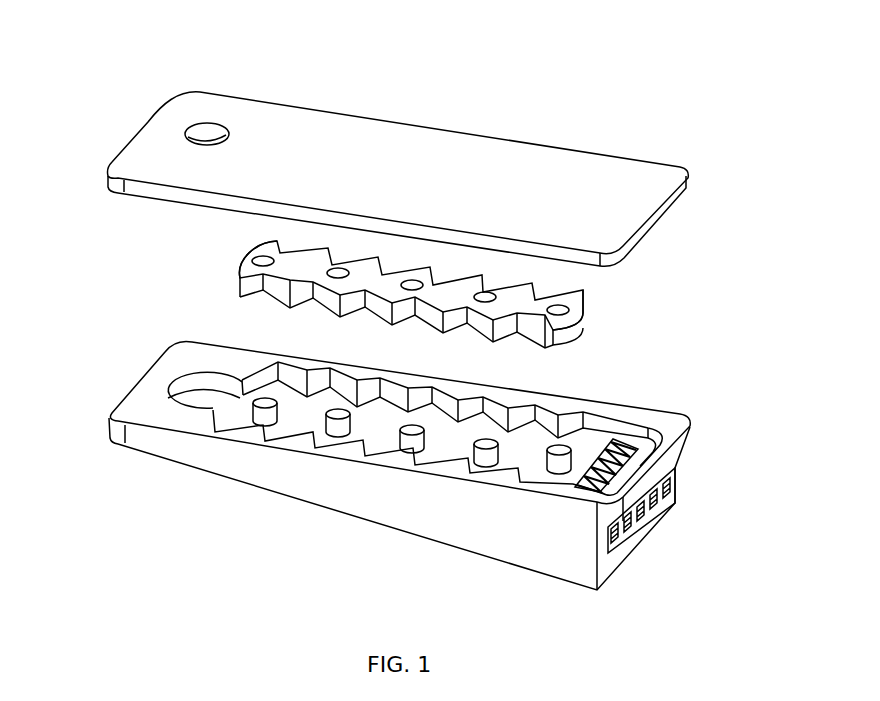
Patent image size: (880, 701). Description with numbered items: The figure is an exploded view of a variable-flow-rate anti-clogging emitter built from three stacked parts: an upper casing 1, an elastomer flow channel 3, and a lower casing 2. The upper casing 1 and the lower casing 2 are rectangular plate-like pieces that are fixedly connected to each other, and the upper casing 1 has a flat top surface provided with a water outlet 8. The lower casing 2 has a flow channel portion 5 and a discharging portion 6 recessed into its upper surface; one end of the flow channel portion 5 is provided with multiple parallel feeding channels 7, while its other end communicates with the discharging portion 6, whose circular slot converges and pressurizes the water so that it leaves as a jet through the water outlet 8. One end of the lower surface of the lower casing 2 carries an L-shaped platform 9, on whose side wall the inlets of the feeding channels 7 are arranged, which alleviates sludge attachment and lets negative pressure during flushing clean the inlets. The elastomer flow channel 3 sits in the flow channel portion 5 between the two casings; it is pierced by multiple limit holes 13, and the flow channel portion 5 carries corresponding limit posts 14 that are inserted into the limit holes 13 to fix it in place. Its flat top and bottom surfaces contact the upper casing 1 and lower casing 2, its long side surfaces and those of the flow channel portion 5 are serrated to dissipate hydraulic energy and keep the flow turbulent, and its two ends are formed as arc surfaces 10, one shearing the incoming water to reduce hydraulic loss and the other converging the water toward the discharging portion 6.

The upper casing 1 is at (343, 130).
The lower casing 2 is at (267, 473).
The elastomer flow channel 3 is at (517, 305).
The flow channel portion 5 is at (525, 453).
The discharging portion 6 is at (200, 404).
The feeding channel 7 is at (632, 453).
The water outlet 8 is at (214, 126).
The L-shaped platform 9 is at (610, 563).
The arc surface 10 is at (235, 281).
The limit hole 13 is at (574, 307).
The limit post 14 is at (409, 439).